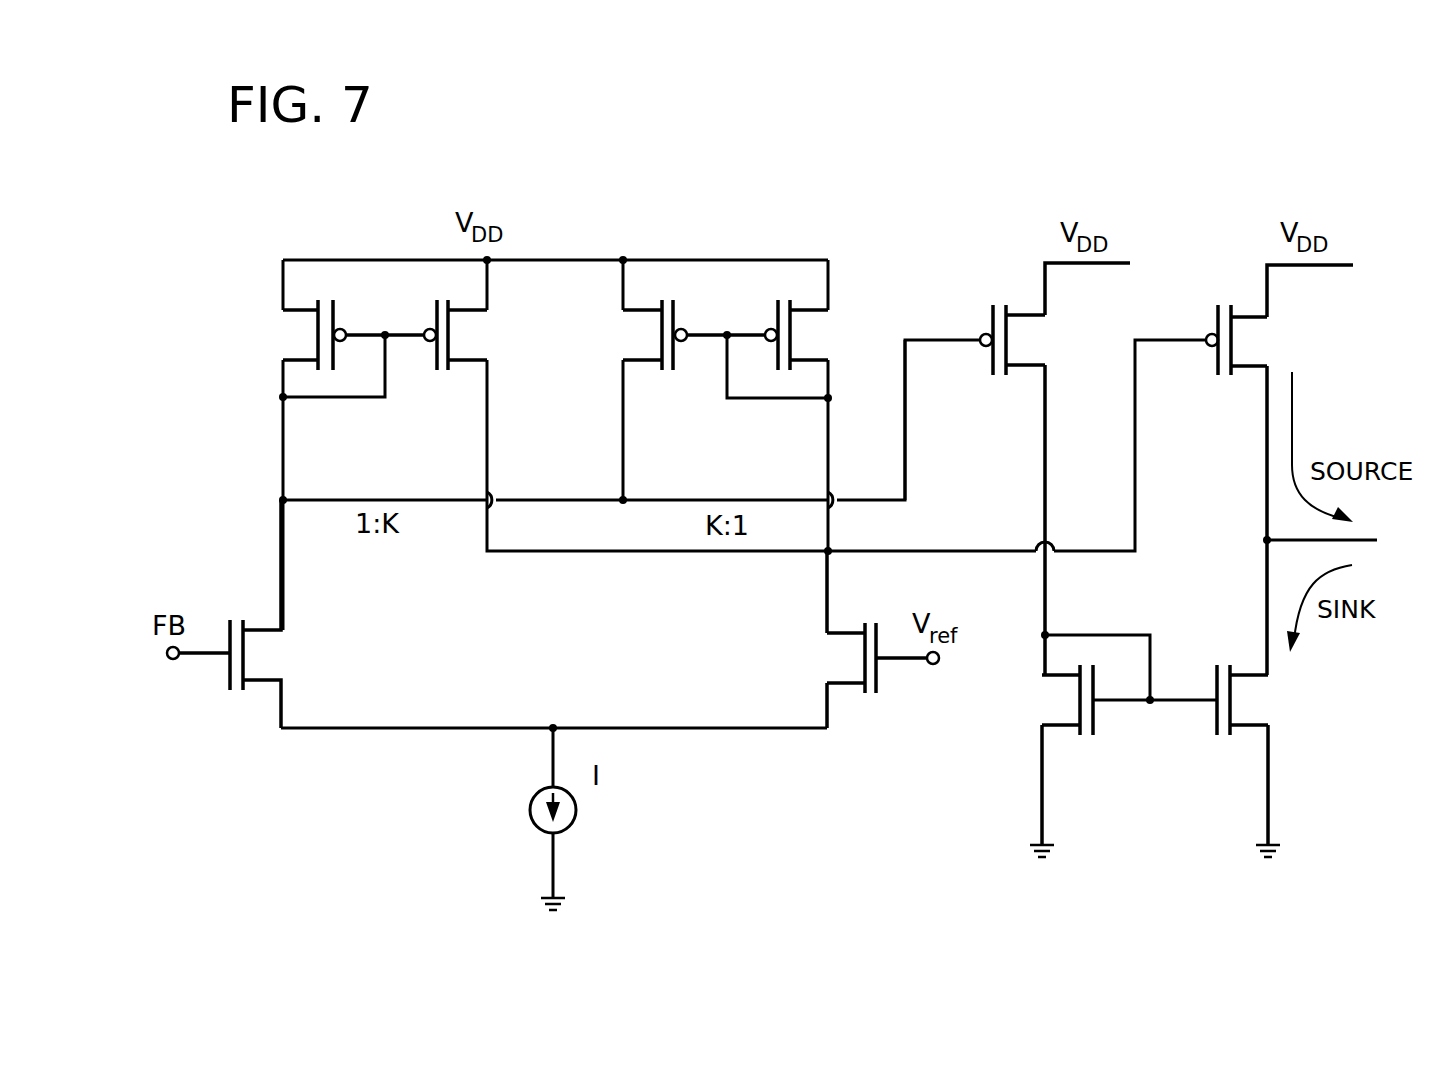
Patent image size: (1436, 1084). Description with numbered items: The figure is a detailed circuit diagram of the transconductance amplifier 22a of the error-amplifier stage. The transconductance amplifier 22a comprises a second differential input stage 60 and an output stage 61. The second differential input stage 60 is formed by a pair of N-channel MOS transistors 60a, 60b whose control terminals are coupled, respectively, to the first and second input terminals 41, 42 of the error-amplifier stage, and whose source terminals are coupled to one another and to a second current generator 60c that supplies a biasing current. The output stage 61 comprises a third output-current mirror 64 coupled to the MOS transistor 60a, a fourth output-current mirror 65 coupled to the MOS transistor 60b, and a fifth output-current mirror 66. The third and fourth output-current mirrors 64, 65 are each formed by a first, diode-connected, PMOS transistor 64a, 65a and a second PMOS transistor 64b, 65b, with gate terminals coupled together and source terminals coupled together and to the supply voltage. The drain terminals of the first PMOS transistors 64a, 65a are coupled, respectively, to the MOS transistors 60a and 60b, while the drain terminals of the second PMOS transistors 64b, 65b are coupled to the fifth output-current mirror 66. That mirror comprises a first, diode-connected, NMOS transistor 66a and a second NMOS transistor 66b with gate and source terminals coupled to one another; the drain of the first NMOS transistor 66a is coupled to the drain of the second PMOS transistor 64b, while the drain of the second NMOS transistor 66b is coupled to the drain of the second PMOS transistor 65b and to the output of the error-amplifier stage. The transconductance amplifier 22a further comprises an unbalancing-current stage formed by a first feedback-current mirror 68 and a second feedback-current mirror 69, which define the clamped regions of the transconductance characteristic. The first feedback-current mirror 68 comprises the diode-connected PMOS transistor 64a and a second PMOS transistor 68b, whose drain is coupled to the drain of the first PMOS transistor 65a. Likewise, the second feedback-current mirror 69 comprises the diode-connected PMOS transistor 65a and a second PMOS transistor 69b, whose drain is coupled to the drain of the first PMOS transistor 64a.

The transconductance amplifier 22a is at (690, 150).
The third output-current mirror 64 is at (352, 242).
The fourth output-current mirror 65 is at (768, 247).
The output stage 61 is at (885, 270).
The second feedback-current mirror 69 is at (606, 300).
The first feedback-current mirror 68 is at (421, 390).
The first, diode-connected, PMOS transistor 64a is at (316, 340).
The second PMOS transistor 68b is at (452, 340).
The second PMOS transistor 69b is at (658, 340).
The first, diode-connected, PMOS transistor 65a is at (795, 340).
The second PMOS transistor 64b is at (1010, 340).
The second PMOS transistor 65b is at (1216, 328).
The second differential input stage 60 is at (437, 782).
The N-channel MOS transistor 60a is at (247, 660).
The N-channel MOS transistor 60b is at (860, 660).
The second current generator 60c is at (577, 805).
The first input terminal 41 is at (168, 662).
The second input terminal 42 is at (932, 667).
The fifth output-current mirror 66 is at (1163, 735).
The first, diode-connected, NMOS transistor 66a is at (1078, 700).
The second NMOS transistor 66b is at (1235, 705).